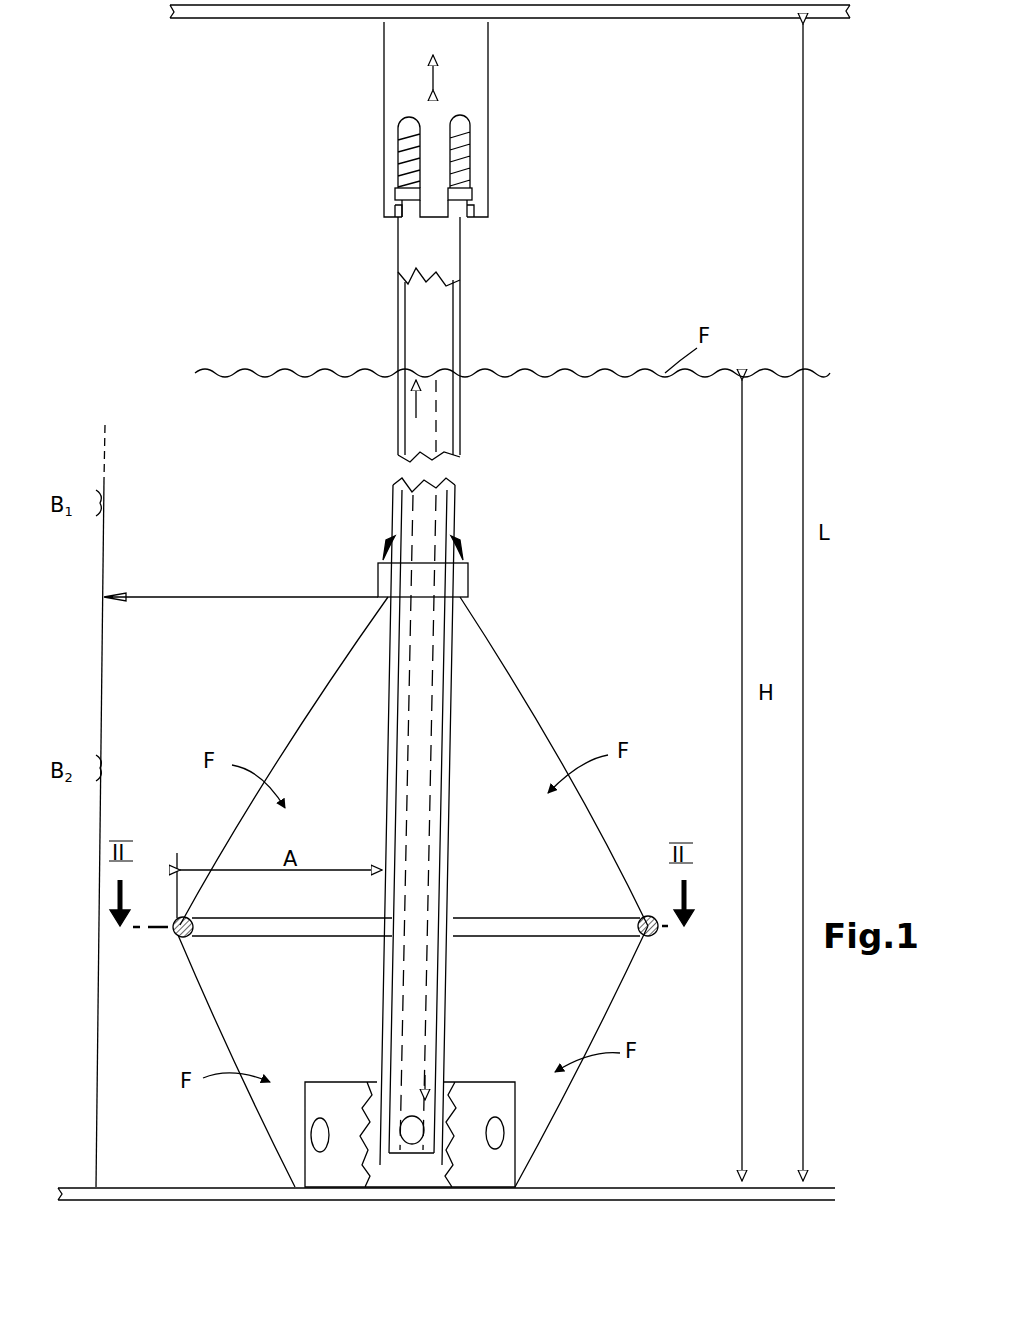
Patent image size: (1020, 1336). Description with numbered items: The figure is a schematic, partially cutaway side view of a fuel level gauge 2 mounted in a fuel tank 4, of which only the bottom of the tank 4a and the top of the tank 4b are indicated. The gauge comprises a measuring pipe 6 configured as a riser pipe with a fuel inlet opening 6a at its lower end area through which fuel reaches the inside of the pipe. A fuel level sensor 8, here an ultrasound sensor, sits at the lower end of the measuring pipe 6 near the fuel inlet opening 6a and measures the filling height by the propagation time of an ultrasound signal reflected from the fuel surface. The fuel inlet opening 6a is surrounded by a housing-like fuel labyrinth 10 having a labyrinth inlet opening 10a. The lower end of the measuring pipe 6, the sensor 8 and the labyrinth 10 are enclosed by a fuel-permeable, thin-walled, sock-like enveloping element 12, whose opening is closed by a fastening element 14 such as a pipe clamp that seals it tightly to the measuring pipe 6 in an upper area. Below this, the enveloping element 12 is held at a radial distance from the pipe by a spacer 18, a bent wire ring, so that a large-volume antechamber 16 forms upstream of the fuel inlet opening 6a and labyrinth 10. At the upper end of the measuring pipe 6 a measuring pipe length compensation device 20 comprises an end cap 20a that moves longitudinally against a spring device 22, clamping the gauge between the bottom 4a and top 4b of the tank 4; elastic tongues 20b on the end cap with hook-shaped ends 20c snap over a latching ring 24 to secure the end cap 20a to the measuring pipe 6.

The fuel level gauge 2 is at (572, 590).
The fuel tank 4 is at (454, 602).
The bottom of the tank 4a is at (192, 1188).
The top of the tank 4b is at (232, 22).
The measuring pipe 6 is at (398, 305).
The fuel inlet opening 6a is at (410, 1132).
The fuel level sensor 8 is at (405, 1180).
The fuel labyrinth 10 is at (465, 1134).
The labyrinth inlet opening 10a is at (500, 1135).
The enveloping element 12 is at (310, 712).
The fastening element 14 is at (460, 578).
The antechamber 16 is at (416, 943).
The spacer 18 is at (264, 932).
The measuring pipe length compensation device 20 is at (431, 126).
The end cap 20a is at (488, 60).
The elastic tongues 20b is at (392, 184).
The hook-shaped ends 20c is at (390, 214).
The spring device 22 is at (458, 148).
The latching ring 24 is at (410, 180).